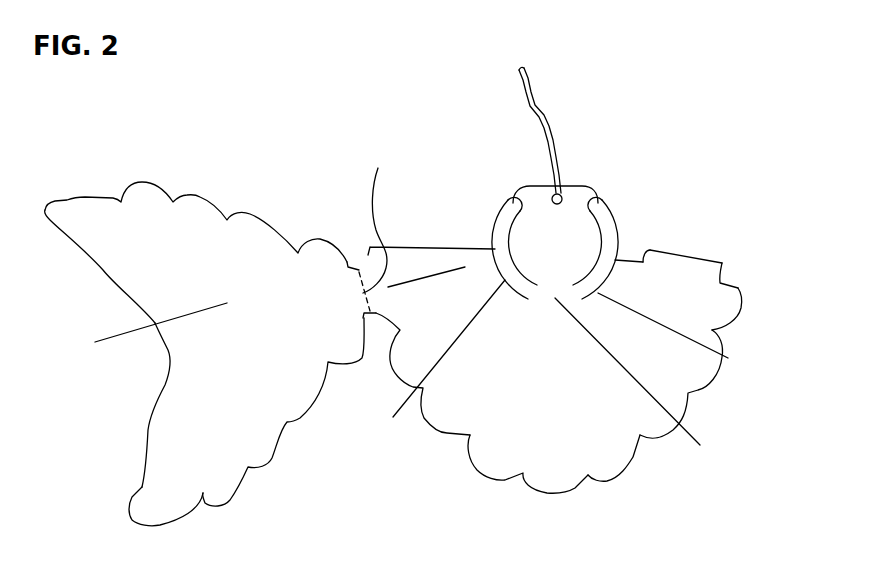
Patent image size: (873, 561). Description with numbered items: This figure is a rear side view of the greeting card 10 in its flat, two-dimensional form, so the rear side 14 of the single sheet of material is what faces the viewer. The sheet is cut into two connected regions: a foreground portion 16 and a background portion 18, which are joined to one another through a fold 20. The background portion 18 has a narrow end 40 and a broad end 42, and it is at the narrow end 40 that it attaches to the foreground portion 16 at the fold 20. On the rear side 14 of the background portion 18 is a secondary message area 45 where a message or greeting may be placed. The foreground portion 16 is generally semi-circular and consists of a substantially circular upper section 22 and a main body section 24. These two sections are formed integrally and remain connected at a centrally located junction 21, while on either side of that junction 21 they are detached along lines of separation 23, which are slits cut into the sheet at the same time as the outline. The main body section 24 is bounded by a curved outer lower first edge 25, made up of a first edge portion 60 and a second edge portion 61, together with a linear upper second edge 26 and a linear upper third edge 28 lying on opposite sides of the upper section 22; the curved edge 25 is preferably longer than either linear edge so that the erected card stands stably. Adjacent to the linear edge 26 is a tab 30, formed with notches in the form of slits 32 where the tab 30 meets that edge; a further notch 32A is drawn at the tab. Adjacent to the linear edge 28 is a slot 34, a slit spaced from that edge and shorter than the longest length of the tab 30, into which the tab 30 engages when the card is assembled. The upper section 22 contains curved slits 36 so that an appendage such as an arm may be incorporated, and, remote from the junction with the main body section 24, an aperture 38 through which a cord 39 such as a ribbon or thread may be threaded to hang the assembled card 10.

The greeting card 10 is at (98, 175).
The rear side 14 is at (241, 349).
The foreground portion 16 is at (490, 443).
The background portion 18 is at (258, 425).
The fold 20 is at (370, 316).
The junction 21 is at (636, 382).
The upper section 22 is at (527, 186).
The lines of separation 23 is at (565, 361).
The main body section 24 is at (657, 369).
The curved outer lower first edge 25 is at (633, 457).
The linear upper second edge 26 is at (625, 259).
The linear upper third edge 28 is at (460, 248).
The tab 30 is at (680, 257).
The slits 32 is at (645, 259).
The step 32A is at (721, 280).
The slot 34 is at (425, 275).
The curved slits 36 is at (505, 207).
The aperture 38 is at (563, 194).
The cord 39 is at (541, 117).
The narrow end 40 is at (347, 257).
The broad end 42 is at (148, 430).
The secondary message area 45 is at (149, 328).
The first edge portion 60 is at (377, 220).
The second edge portion 61 is at (735, 318).